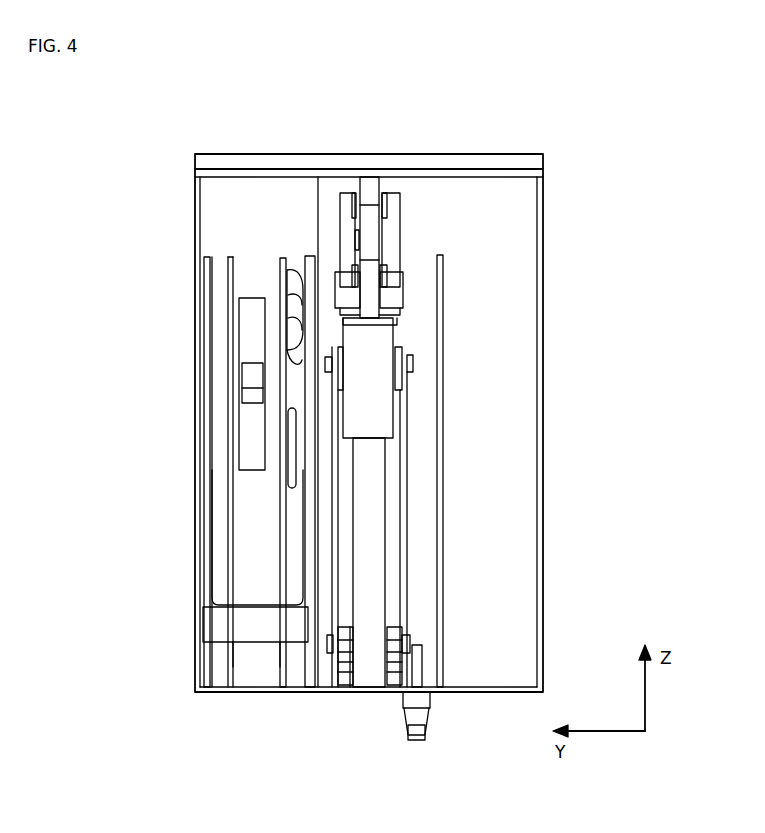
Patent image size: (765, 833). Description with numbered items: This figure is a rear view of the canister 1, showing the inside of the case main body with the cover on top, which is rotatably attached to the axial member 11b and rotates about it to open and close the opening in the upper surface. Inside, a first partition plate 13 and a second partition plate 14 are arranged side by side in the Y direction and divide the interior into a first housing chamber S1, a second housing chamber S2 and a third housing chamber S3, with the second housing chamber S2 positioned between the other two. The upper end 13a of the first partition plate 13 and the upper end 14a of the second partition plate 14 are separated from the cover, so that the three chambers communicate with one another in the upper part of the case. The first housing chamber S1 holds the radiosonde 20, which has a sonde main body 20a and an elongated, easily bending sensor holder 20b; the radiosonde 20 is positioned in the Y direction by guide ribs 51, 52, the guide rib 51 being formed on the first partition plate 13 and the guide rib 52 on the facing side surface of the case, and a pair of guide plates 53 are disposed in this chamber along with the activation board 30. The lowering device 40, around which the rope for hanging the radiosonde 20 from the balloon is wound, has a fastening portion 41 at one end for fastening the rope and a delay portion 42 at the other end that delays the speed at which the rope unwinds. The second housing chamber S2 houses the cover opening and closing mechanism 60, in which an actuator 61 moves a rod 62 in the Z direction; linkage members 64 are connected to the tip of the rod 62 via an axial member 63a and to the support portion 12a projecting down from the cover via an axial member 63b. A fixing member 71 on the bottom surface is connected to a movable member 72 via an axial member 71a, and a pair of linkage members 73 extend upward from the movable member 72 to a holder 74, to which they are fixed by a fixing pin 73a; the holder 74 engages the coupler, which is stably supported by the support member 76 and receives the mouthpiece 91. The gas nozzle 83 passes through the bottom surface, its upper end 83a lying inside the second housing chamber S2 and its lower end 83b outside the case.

The canister 1 is at (152, 135).
The axial member 11b is at (520, 166).
The support portion 12a is at (369, 200).
The first partition plate 13 is at (321, 245).
The upper end 13a is at (306, 240).
The second partition plate 14 is at (441, 598).
The upper end 14a is at (443, 258).
The radiosonde 20 is at (222, 378).
The sonde main body 20a is at (247, 528).
The sensor holder 20b is at (252, 318).
The activation board 30 is at (245, 630).
The lowering device 40 is at (298, 343).
The fastening portion 41 is at (305, 268).
The delay portion 42 is at (297, 445).
The guide rib 51 is at (308, 262).
The guide rib 52 is at (207, 257).
The guide plates 53 is at (280, 667).
The cover opening and closing mechanism 60 is at (388, 520).
The actuator 61 is at (378, 375).
The rod 62 is at (368, 300).
The axial member 63a is at (385, 263).
The axial member 63b is at (390, 240).
The linkage members 64 is at (356, 230).
The fixing member 71 is at (333, 675).
The axial member 71a is at (395, 640).
The movable member 72 is at (345, 670).
The linkage members 73 is at (335, 580).
The fixing pin 73a is at (415, 360).
The holder 74 is at (400, 350).
The support member 76 is at (395, 456).
The gas nozzle 83 is at (432, 712).
The upper end 83a is at (415, 665).
The lower end 83b is at (416, 722).
The mouthpiece 91 is at (403, 211).
The first housing chamber S1 is at (252, 256).
The second housing chamber S2 is at (422, 497).
The third housing chamber S3 is at (503, 435).